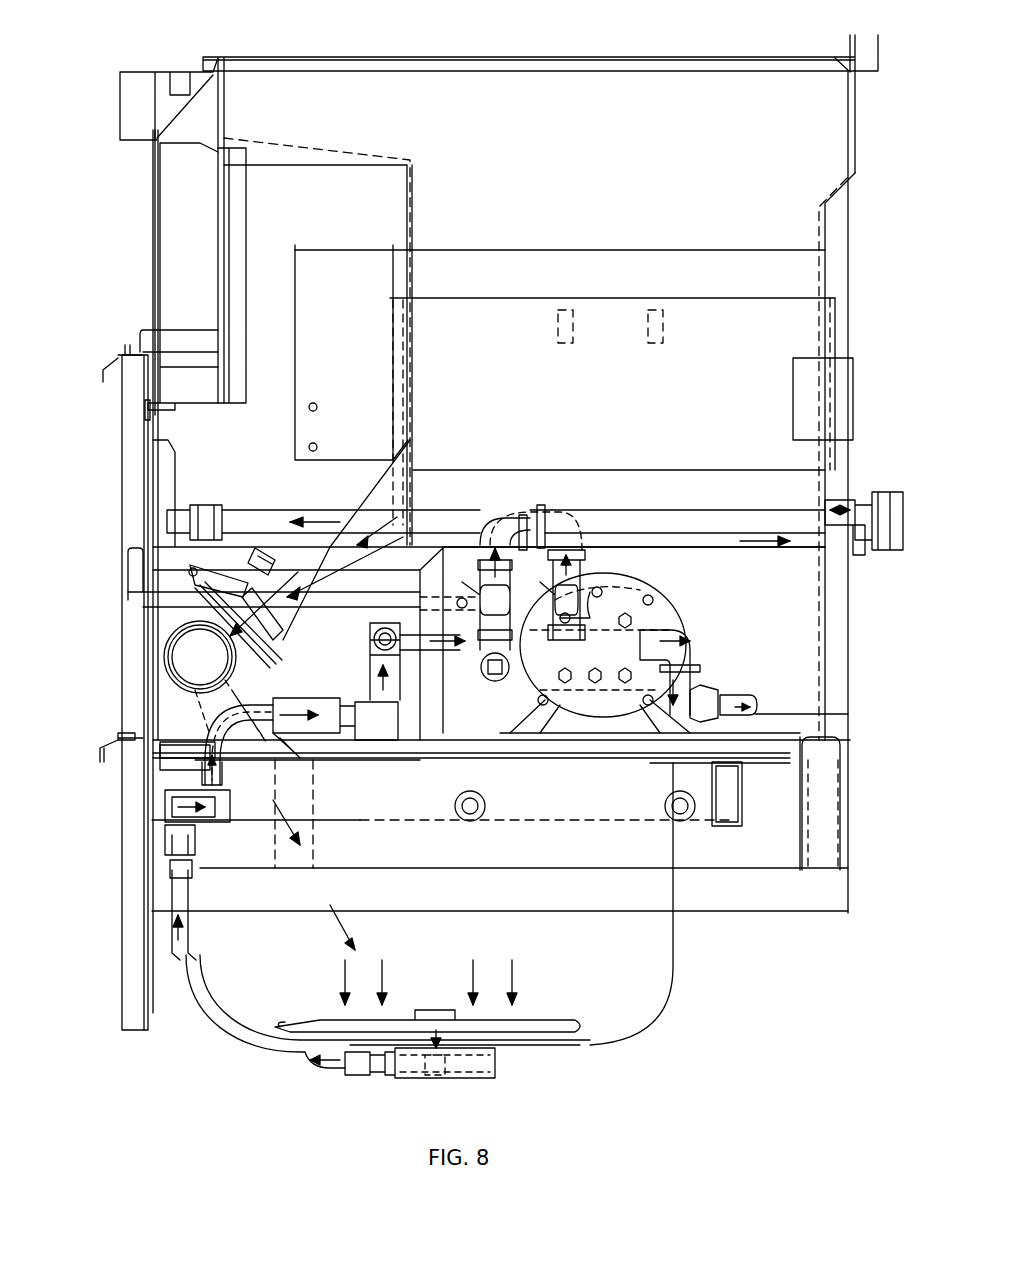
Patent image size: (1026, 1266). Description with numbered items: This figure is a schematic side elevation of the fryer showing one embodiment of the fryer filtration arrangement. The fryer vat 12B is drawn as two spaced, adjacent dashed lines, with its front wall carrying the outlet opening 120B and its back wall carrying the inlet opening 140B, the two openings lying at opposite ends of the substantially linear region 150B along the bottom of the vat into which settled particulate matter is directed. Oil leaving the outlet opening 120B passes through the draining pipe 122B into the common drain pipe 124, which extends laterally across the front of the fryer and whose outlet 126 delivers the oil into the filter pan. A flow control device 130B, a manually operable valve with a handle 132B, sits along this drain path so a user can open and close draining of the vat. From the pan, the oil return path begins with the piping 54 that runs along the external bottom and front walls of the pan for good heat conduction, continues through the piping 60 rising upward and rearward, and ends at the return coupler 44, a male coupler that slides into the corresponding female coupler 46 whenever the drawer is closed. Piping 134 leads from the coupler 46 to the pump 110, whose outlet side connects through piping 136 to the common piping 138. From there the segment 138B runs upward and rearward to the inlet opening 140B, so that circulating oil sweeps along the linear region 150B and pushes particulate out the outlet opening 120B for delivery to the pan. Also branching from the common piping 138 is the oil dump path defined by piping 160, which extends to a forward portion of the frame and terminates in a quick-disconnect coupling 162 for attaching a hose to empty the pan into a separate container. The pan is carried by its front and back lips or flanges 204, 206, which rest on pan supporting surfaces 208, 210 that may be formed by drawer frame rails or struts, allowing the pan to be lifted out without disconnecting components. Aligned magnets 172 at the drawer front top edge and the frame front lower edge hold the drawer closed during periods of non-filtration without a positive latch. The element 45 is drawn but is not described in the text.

The fryer vat 12B is at (588, 176).
The quick-disconnect coupling 162 is at (182, 508).
The piping 160 is at (288, 508).
The draining pipe 122B is at (395, 505).
The outlet opening 120B is at (415, 495).
The substantially linear region 150B is at (625, 522).
The inlet opening 140B is at (820, 505).
The segment of common piping 138B is at (695, 548).
The handle 132B is at (128, 578).
The flow control device 130B is at (325, 605).
The common drain pipe 124 is at (163, 650).
The piping 60 is at (200, 657).
The outlet 126 is at (195, 705).
The magnets 172 is at (110, 732).
The corresponding coupler 46 is at (305, 698).
The return coupler 44 is at (295, 735).
The front lip or flange 204 is at (165, 740).
The pan supporting surface 208 is at (175, 762).
The piping 134 is at (405, 745).
The pan supporting surface 210 is at (690, 763).
The back lip or flange 206 is at (730, 740).
The common piping 138 is at (480, 668).
The pump 110 is at (660, 608).
The piping 136 is at (700, 683).
The spray bar 45 is at (535, 1010).
The piping 54 is at (320, 1070).